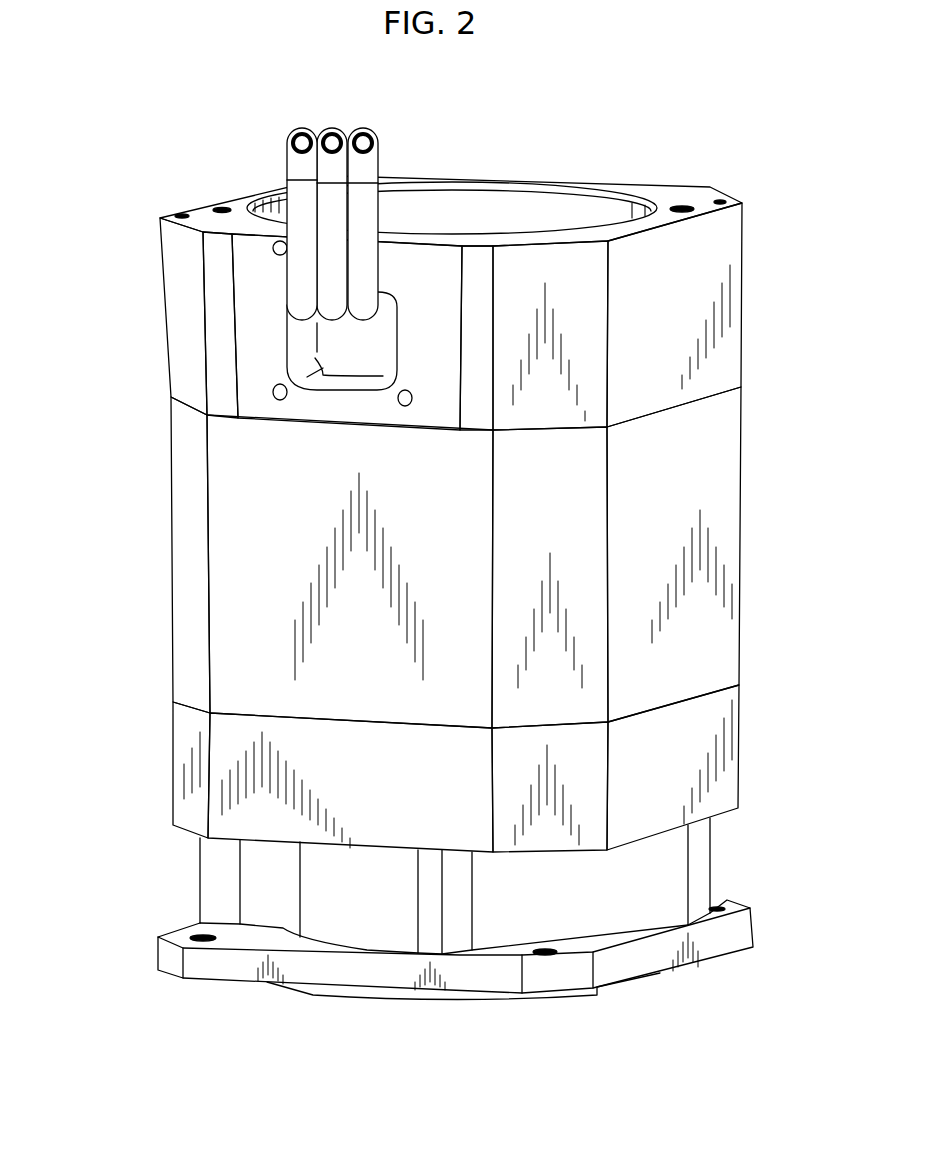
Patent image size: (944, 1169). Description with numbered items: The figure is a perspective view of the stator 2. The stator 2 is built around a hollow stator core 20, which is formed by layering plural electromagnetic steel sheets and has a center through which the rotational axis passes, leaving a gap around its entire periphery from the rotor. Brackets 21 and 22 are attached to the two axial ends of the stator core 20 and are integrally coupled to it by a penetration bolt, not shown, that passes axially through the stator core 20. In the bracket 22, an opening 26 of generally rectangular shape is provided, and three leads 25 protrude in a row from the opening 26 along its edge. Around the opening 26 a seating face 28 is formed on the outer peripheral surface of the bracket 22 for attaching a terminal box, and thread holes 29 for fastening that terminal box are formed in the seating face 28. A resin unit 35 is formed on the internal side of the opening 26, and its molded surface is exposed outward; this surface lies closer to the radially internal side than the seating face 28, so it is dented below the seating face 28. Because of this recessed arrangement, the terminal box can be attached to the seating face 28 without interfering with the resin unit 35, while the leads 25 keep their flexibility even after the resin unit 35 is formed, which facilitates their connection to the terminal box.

The stator 2 is at (770, 436).
The stator core 20 is at (744, 560).
The bracket 21 is at (742, 742).
The bracket 22 is at (462, 303).
The leads 25 is at (382, 130).
The opening 26 is at (337, 342).
The seating face 28 is at (257, 370).
The thread holes 29 is at (279, 246).
The resin unit 35 is at (222, 321).